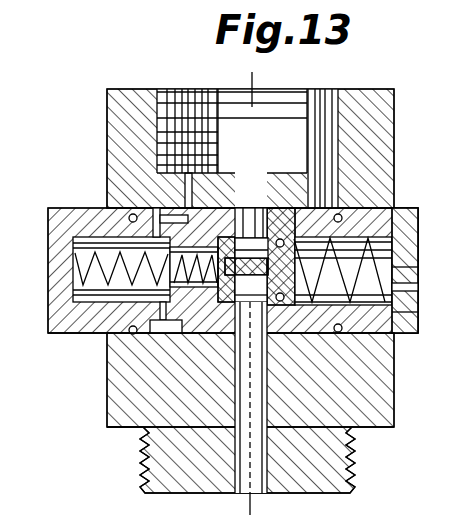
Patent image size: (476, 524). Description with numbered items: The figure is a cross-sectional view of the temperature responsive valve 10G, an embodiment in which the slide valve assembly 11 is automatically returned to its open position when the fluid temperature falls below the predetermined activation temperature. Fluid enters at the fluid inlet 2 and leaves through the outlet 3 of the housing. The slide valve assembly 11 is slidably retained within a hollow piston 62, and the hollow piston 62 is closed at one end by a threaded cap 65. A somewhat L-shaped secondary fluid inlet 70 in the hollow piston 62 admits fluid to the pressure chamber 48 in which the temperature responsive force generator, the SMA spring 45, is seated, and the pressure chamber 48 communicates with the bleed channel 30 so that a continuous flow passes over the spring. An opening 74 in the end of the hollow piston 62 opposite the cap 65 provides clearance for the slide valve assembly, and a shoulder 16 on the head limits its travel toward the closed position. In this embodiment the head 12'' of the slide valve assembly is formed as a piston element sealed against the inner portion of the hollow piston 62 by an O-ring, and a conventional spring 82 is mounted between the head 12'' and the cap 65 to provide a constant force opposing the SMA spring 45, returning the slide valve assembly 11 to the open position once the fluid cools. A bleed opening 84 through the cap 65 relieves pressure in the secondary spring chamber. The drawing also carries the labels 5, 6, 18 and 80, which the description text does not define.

The fluid inlet 2 is at (308, 98).
The outlet 3 is at (253, 458).
The valve stem 5 is at (260, 356).
The valve assembly 6 is at (466, 366).
The temperature responsive valve 10G is at (120, 436).
The slide valve assembly 11 is at (307, 147).
The head of the slide valve assembly 12'' is at (341, 233).
The shoulder 16 is at (242, 79).
The bore 18 is at (258, 147).
The bleed channel 30 is at (232, 362).
The SMA spring 45 is at (132, 282).
The pressure chamber 48 is at (93, 236).
The hollow piston 62 is at (36, 326).
The threaded cap 65 is at (444, 191).
The secondary fluid inlet 70 is at (160, 210).
The opening 74 is at (162, 337).
The cap seat 80 is at (405, 310).
The spring 82 is at (384, 284).
The bleed opening 84 is at (415, 260).